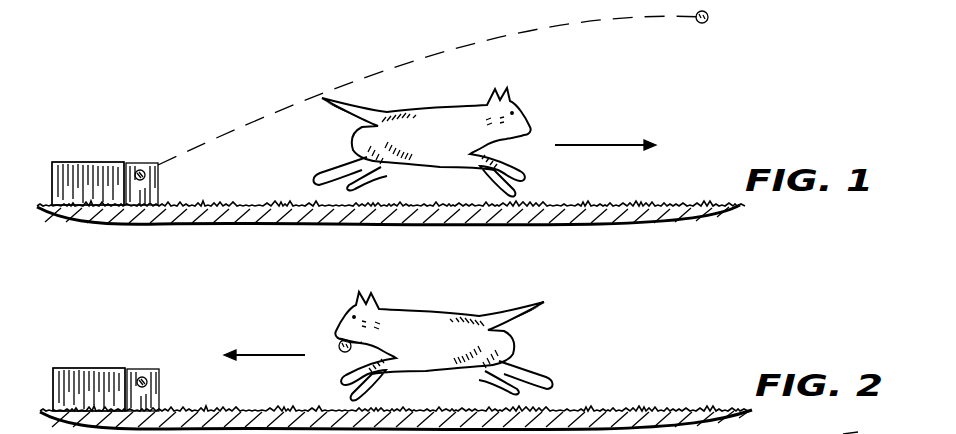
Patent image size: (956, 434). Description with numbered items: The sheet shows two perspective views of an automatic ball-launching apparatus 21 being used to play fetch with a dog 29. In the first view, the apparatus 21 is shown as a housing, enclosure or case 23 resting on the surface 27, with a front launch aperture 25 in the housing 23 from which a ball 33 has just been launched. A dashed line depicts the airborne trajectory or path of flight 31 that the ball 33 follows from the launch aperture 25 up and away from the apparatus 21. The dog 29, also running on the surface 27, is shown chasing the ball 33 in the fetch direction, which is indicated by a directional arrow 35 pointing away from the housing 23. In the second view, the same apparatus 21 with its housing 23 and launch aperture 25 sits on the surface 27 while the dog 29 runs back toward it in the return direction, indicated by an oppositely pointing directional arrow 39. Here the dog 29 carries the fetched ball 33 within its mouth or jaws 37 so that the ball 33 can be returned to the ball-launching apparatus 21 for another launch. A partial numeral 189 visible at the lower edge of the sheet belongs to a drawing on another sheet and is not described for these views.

In FIG. 1, the ball-launching apparatus 21 is at (127, 150).
In FIG. 2, the ball-launching apparatus 21 is at (130, 359).
In FIG. 1, the housing 23 is at (96, 173).
In FIG. 2, the housing 23 is at (78, 385).
In FIG. 1, the front launch aperture 25 is at (146, 176).
In FIG. 2, the front launch aperture 25 is at (148, 383).
In FIG. 1, the surface 27 is at (672, 205).
In FIG. 2, the surface 27 is at (655, 410).
In FIG. 1, the dog 29 is at (432, 130).
In FIG. 2, the dog 29 is at (460, 333).
In FIG. 1, the path of flight 31 is at (519, 33).
In FIG. 1, the ball 33 is at (709, 20).
In FIG. 2, the ball 33 is at (339, 347).
In FIG. 1, the directional arrow 35 is at (621, 128).
In FIG. 2, the mouth or jaws 37 is at (341, 365).
In FIG. 2, the directional arrow 39 is at (270, 338).
In FIG. 2, the partial numeral from adjacent figure 189 is at (870, 425).